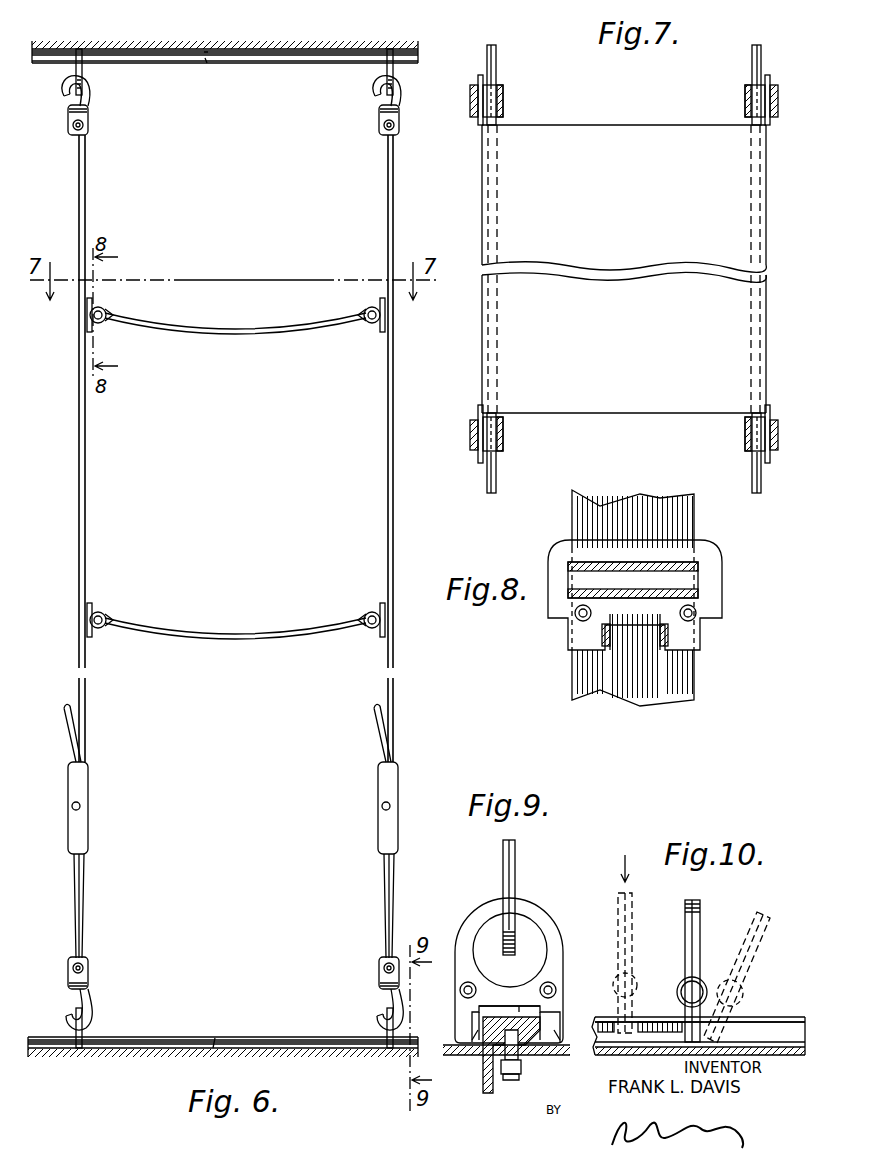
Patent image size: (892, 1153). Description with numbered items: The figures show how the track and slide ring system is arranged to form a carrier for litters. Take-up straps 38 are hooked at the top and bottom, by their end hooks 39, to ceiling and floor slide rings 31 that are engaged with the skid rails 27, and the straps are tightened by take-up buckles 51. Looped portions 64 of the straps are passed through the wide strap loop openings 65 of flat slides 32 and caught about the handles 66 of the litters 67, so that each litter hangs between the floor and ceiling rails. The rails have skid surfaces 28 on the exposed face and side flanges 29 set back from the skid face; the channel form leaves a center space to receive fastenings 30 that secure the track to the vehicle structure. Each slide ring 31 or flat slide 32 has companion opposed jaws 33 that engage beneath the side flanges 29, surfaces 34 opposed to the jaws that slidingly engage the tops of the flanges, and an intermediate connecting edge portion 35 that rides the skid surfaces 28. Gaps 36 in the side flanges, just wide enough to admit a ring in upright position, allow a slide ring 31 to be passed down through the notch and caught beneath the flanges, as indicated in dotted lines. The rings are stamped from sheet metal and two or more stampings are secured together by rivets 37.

In FIG. 6, the skid rail 27 is at (297, 63).
In FIG. 9, the skid rail 27 is at (540, 1053).
In FIG. 10, the skid rail 27 is at (778, 1038).
In FIG. 9, the skid surface 28 is at (494, 1008).
In FIG. 10, the skid surface 28 is at (763, 1006).
In FIG. 6, the side flange 29 is at (246, 63).
In FIG. 9, the side flange 29 is at (472, 1031).
In FIG. 10, the side flange 29 is at (668, 1034).
In FIG. 9, the fastening 30 is at (511, 1050).
In FIG. 6, the slide ring 31 is at (68, 96).
In FIG. 9, the slide ring 31 is at (545, 925).
In FIG. 10, the slide ring 31 is at (633, 951).
In FIG. 6, the flat slide 32 is at (99, 300).
In FIG. 7, the flat slide 32 is at (479, 89).
In FIG. 8, the flat slide 32 is at (722, 571).
In FIG. 8, the jaw 33 is at (602, 644).
In FIG. 9, the jaw 33 is at (477, 1039).
In FIG. 9, the surface 34 is at (472, 1017).
In FIG. 9, the intermediate connecting edge portion 35 is at (522, 1008).
In FIG. 6, the gap 36 is at (206, 63).
In FIG. 10, the gap 36 is at (632, 1025).
In FIG. 8, the rivet 37 is at (696, 612).
In FIG. 9, the rivet 37 is at (460, 990).
In FIG. 6, the take-up strap 38 is at (79, 468).
In FIG. 7, the take-up strap 38 is at (470, 108).
In FIG. 8, the take-up strap 38 is at (645, 505).
In FIG. 9, the end hook 39 is at (515, 863).
In FIG. 6, the take-up buckle 51 is at (68, 790).
In FIG. 6, the looped portion 64 is at (108, 322).
In FIG. 7, the looped portion 64 is at (503, 107).
In FIG. 8, the strap loop opening 65 is at (700, 562).
In FIG. 6, the handle 66 is at (104, 310).
In FIG. 7, the handle 66 is at (497, 61).
In FIG. 6, the litter 67 is at (232, 331).
In FIG. 7, the litter 67 is at (624, 269).